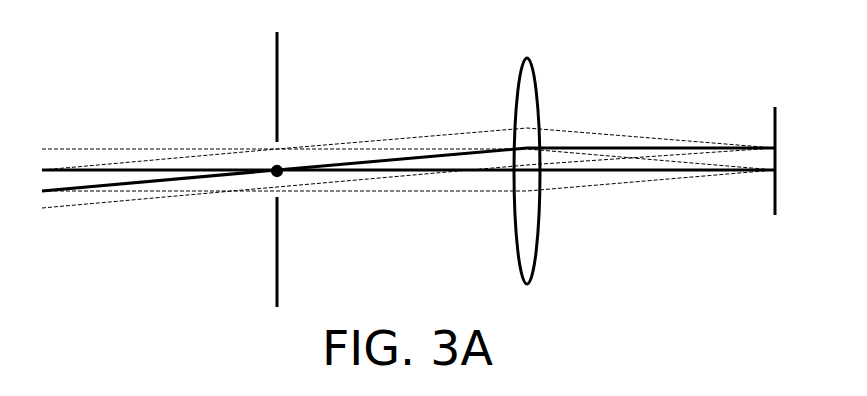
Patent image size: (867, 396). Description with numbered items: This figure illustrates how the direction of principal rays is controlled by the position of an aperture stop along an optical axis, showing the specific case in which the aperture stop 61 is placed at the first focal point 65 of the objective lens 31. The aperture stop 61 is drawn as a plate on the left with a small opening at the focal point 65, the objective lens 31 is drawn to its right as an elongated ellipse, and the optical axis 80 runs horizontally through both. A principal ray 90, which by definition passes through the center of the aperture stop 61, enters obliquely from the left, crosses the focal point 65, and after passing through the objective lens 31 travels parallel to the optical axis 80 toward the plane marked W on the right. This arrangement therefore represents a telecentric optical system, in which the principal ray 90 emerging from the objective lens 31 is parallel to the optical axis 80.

The objective lens 31 is at (537, 75).
The aperture stop 61 is at (278, 68).
The first focal point 65 is at (282, 165).
The optical axis 80 is at (638, 173).
The principal ray 90 is at (647, 145).
The wafer W is at (774, 202).